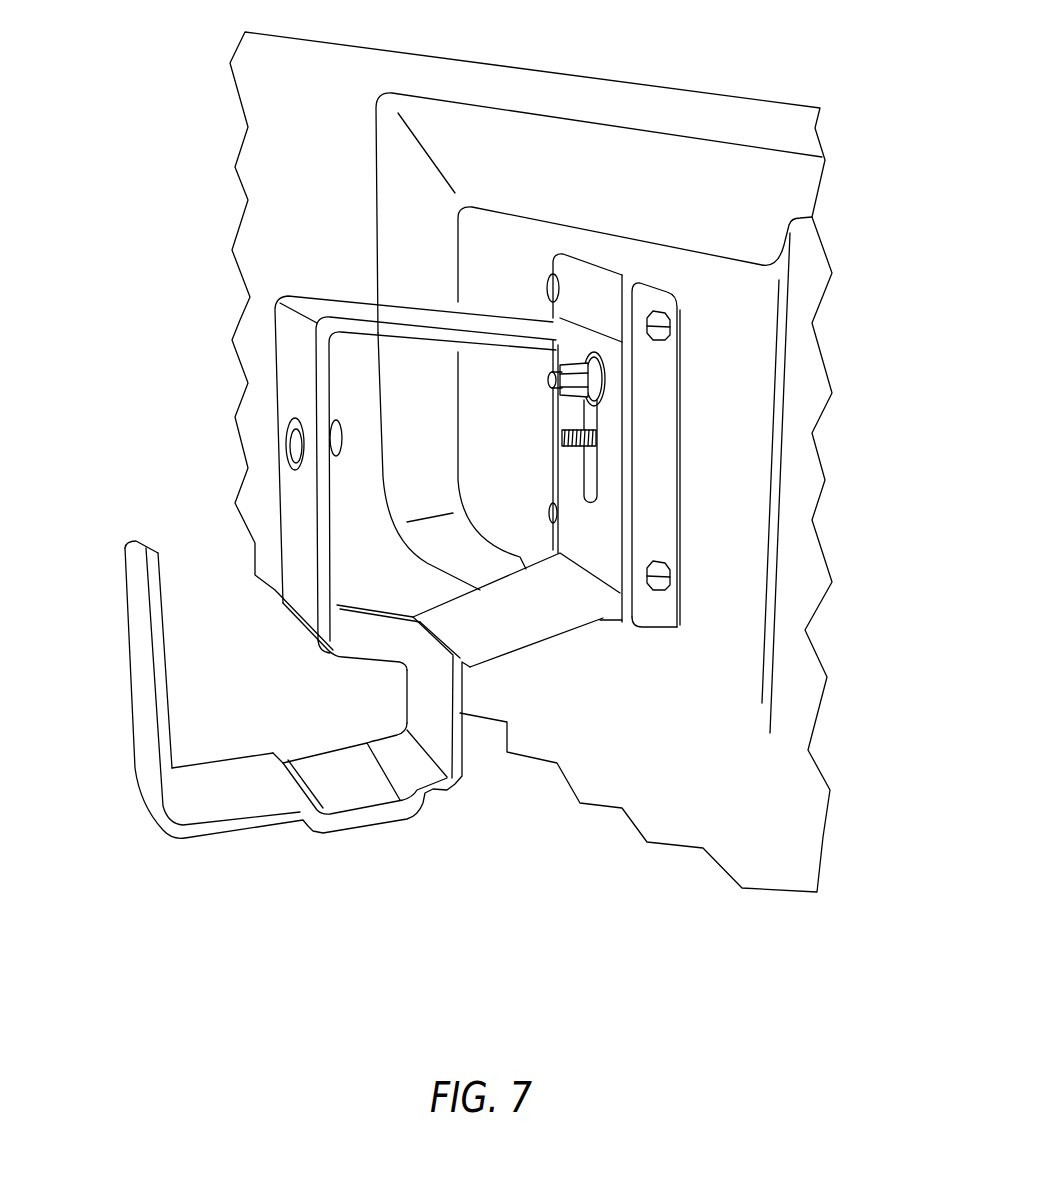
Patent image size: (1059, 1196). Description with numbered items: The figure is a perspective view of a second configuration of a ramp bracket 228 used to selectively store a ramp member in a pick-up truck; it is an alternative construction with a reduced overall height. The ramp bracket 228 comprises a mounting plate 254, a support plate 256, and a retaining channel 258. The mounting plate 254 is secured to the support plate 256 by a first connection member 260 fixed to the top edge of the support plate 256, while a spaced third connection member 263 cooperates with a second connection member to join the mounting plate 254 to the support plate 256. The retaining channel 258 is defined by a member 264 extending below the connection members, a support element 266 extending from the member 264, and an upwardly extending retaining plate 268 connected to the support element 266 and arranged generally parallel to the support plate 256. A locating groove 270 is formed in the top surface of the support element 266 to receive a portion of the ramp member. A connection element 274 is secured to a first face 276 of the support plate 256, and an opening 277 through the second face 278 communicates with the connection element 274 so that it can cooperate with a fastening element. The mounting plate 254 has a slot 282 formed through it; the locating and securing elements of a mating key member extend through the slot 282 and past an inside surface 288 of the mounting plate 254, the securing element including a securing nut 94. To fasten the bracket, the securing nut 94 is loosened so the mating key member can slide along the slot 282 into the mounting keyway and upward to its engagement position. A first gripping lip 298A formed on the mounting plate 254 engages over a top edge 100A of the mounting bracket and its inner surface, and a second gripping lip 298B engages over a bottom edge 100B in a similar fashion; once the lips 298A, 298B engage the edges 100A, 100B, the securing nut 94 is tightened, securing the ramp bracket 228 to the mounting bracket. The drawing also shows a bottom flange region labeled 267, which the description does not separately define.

The ramp bracket 228 is at (222, 440).
The support plate 256 is at (293, 522).
The retaining channel 258 is at (228, 665).
The first connection member 260 is at (487, 313).
The third connection member 263 is at (367, 625).
The member 264 is at (463, 743).
The support element 266 is at (257, 777).
The bottom flange 267 is at (503, 620).
The retaining plate 268 is at (137, 638).
The locating groove 270 is at (345, 797).
The connection element 274 is at (343, 452).
The first face 276 is at (337, 554).
The opening 277 is at (287, 452).
The second face 278 is at (303, 388).
The slot 282 is at (587, 487).
The inside surface 288 is at (598, 543).
The mounting plate 254 is at (603, 552).
The securing nut 94 is at (606, 393).
The top edge 100A is at (658, 290).
The bottom edge 100B is at (657, 637).
The first gripping lip 298A is at (611, 258).
The second gripping lip 298B is at (627, 634).